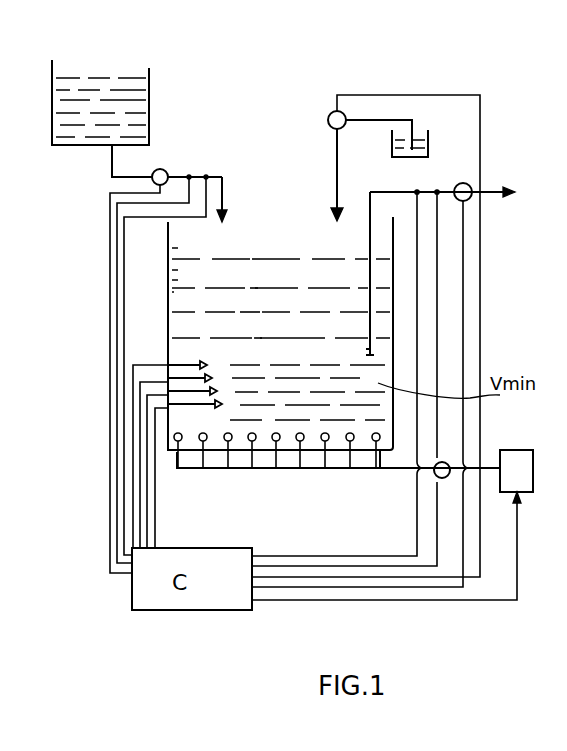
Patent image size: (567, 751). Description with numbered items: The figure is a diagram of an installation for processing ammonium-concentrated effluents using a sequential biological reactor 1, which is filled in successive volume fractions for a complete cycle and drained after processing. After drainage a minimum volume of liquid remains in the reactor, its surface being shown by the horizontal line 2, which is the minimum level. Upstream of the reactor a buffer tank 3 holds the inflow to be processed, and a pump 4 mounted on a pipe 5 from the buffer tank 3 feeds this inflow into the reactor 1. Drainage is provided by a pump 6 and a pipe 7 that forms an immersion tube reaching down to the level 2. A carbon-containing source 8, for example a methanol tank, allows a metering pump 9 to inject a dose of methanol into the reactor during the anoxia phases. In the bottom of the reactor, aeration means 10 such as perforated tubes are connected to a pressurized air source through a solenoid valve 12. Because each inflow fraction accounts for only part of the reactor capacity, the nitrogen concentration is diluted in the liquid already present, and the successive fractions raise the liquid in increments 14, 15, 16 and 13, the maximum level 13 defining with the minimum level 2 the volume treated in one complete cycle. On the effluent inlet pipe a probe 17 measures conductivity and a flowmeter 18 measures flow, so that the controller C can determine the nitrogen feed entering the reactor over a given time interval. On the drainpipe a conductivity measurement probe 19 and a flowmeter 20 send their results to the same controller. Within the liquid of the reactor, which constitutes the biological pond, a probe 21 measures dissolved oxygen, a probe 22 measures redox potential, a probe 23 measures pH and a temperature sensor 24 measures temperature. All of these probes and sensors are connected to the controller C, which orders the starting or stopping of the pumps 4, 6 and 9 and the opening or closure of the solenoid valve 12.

The sequential biological reactor 1 is at (528, 492).
The minimum level 2 is at (326, 338).
The buffer tank 3 is at (148, 70).
The pump 4 is at (162, 169).
The pipe 5 is at (112, 168).
The pump 6 is at (468, 200).
The pipe 7 is at (368, 258).
The carbon-containing source 8 is at (424, 130).
The metering pump 9 is at (331, 114).
The aeration means 10 is at (250, 443).
The solenoid valve 12 is at (436, 478).
The maximum level 13 is at (244, 257).
The level increment 14 is at (254, 340).
The level increment 15 is at (212, 310).
The level increment 16 is at (248, 288).
The conductivity probe 17 is at (190, 175).
The flowmeter 18 is at (208, 175).
The conductivity measurement probe 19 is at (414, 190).
The flowmeter 20 is at (438, 190).
The dissolved oxygen probe 21 is at (212, 405).
The redox potential probe 22 is at (200, 392).
The pH probe 23 is at (192, 370).
The temperature sensor 24 is at (195, 360).